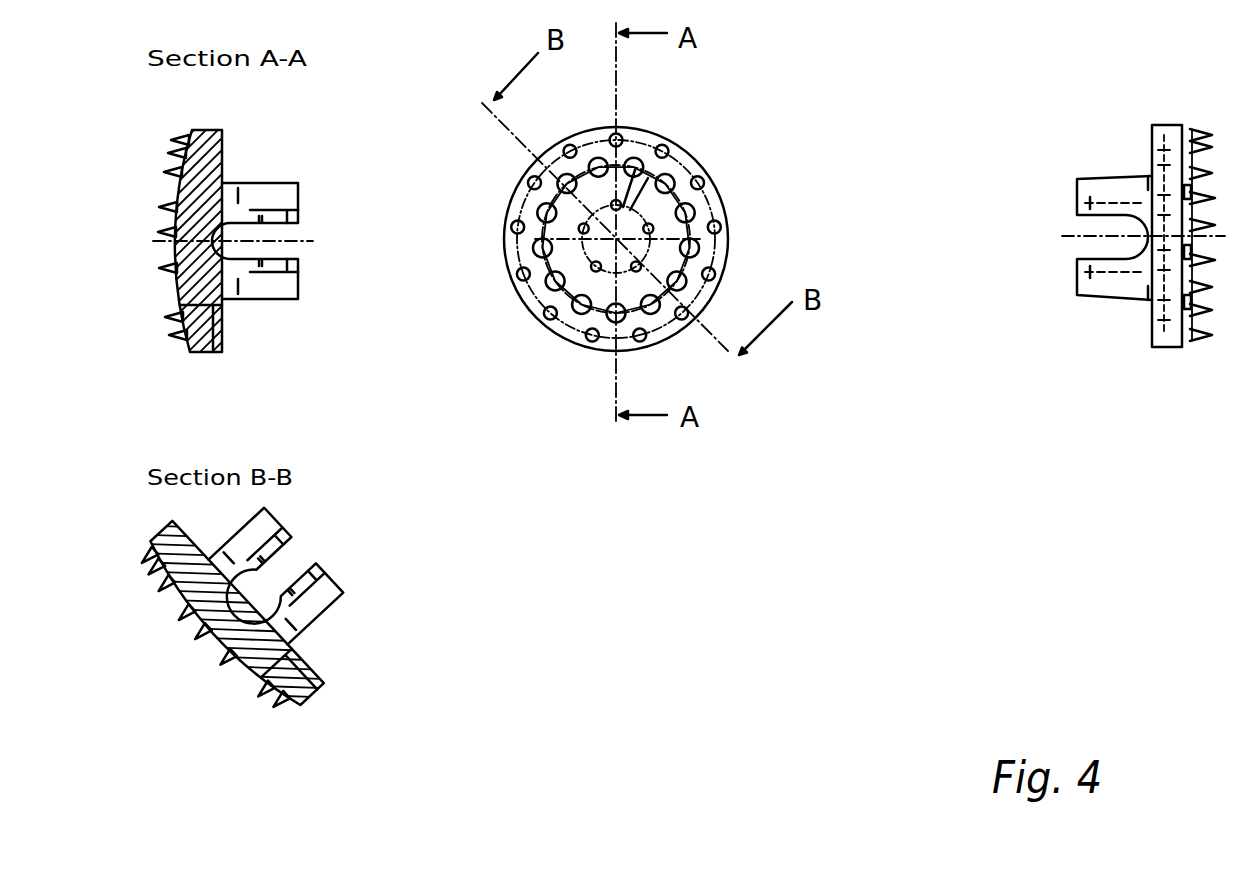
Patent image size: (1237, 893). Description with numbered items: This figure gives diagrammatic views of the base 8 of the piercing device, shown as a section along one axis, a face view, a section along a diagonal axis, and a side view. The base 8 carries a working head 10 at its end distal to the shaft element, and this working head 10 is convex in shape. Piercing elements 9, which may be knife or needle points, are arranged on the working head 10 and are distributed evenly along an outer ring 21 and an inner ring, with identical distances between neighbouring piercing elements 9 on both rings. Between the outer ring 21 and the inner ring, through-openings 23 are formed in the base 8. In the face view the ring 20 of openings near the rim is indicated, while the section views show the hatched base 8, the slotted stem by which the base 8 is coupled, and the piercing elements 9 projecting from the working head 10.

The base 8 is at (250, 192).
The piercing elements 9 is at (162, 268).
The working head 10 is at (136, 245).
The outer holes 20 is at (700, 178).
The outer ring 21 is at (653, 229).
The through-openings 23 is at (205, 318).